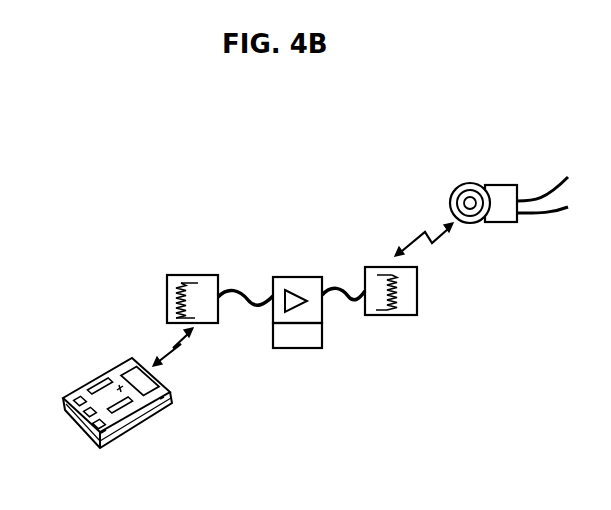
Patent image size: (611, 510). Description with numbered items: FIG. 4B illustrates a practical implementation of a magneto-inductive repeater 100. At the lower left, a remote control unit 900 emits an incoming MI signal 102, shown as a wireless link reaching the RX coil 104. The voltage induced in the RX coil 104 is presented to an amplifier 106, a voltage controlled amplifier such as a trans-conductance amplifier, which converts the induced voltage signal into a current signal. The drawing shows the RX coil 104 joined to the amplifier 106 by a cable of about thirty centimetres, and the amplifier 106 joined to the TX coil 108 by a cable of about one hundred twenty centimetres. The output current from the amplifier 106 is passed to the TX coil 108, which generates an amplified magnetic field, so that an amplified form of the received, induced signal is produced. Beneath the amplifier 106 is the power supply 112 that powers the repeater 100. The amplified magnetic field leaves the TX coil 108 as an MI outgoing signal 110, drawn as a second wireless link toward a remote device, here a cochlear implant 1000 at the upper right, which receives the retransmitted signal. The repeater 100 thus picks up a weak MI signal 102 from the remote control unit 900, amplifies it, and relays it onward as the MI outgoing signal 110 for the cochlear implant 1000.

The repeater 100 is at (398, 372).
The MI signal 102 is at (182, 355).
The RX coil 104 is at (196, 275).
The amplifier 106 is at (313, 277).
The TX coil 108 is at (417, 295).
The MI outgoing signal 110 is at (438, 247).
The power supply 112 is at (307, 348).
The remote control unit 900 is at (142, 422).
The cochlear implant 1000 is at (472, 183).